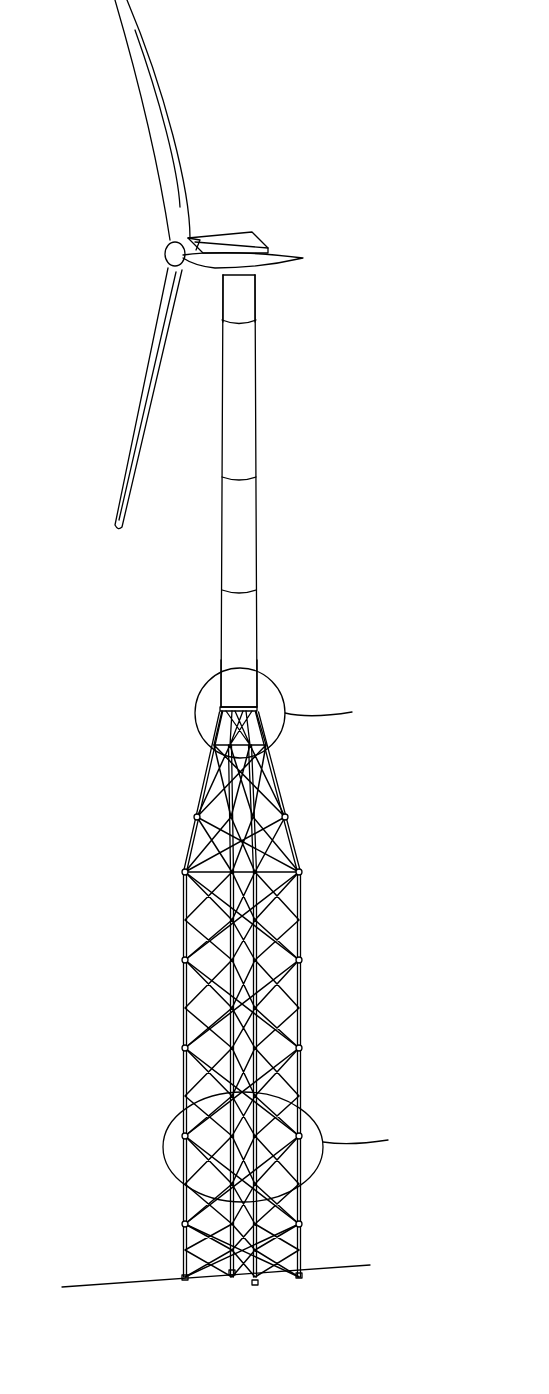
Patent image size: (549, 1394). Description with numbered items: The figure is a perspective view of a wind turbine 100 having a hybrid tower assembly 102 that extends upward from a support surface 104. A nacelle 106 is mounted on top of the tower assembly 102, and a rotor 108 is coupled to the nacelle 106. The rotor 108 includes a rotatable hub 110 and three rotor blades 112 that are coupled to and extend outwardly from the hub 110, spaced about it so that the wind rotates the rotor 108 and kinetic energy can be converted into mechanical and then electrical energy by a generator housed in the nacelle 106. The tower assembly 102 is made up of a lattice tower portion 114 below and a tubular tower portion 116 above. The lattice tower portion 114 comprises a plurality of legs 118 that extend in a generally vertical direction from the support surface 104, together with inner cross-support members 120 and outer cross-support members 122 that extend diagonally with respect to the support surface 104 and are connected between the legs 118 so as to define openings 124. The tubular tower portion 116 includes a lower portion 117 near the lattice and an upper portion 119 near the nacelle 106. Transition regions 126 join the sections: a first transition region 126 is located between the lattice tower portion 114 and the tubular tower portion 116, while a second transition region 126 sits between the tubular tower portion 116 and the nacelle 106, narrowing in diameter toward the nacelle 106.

The wind turbine 100 is at (406, 197).
The tower assembly 102 is at (301, 677).
The support surface 104 is at (130, 1280).
The nacelle 106 is at (248, 238).
The rotor 108 is at (158, 267).
The rotatable hub 110 is at (170, 250).
The rotor blade 112 is at (165, 155).
The lattice tower portion 114 is at (309, 1011).
The tubular tower portion 116 is at (267, 554).
The lower portion 117 is at (221, 694).
The legs 118 is at (300, 1075).
The upper portion 119 is at (247, 348).
The inner cross-support members 120 is at (184, 1047).
The outer cross-support members 122 is at (184, 1105).
The openings 124 is at (277, 872).
The transition region 126 is at (264, 305).